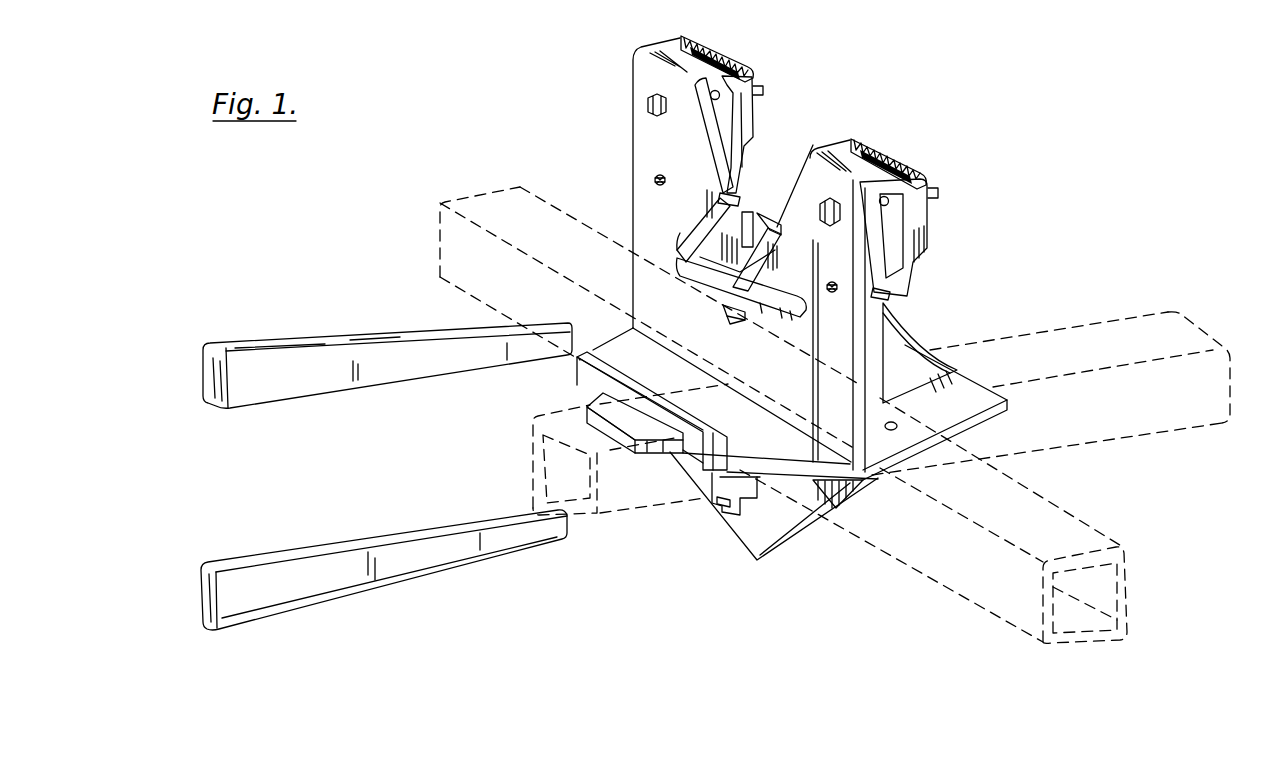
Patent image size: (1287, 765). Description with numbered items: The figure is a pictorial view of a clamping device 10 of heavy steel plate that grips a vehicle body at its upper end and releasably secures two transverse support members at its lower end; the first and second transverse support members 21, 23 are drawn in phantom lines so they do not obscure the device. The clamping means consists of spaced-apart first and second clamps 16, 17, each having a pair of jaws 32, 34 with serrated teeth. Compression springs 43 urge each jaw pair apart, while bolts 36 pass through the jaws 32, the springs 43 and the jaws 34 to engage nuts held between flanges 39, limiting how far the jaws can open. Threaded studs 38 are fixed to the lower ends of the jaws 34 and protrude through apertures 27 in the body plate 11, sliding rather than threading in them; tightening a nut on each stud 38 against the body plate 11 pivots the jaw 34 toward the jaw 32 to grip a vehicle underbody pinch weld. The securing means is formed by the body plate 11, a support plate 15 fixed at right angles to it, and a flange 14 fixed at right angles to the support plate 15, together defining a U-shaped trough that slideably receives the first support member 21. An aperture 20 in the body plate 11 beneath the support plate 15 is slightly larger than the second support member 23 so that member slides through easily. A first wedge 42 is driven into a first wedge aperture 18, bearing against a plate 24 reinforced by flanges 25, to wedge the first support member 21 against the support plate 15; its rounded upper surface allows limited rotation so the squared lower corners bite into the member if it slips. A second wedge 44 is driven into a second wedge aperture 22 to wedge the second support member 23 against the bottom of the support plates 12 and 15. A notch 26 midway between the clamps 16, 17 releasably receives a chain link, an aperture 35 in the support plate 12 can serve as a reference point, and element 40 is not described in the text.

The clamping device 10 is at (853, 97).
The body plate 11 is at (634, 222).
The support plate 12 is at (975, 382).
The flange 14 is at (577, 383).
The support plate 15 is at (637, 347).
The first clamp 16 is at (633, 145).
The second clamp 17 is at (795, 178).
The first wedge aperture 18 is at (735, 313).
The aperture 20 is at (748, 484).
The first transverse support member 21 is at (1050, 522).
The second wedge aperture 22 is at (730, 508).
The second transverse support member 23 is at (1098, 320).
The plate 24 is at (700, 278).
The flanges 25 is at (705, 232).
The notch 26 is at (805, 162).
The apertures 27 is at (664, 176).
The jaw 32 is at (670, 42).
The jaw 34 is at (694, 46).
The aperture 35 is at (894, 425).
The bolt 36 is at (646, 107).
The threaded stud 38 is at (655, 182).
The flanges 39 is at (757, 128).
The gusset 40 is at (903, 355).
The first wedge 42 is at (362, 380).
The compression spring 43 is at (719, 97).
The second wedge 44 is at (395, 540).